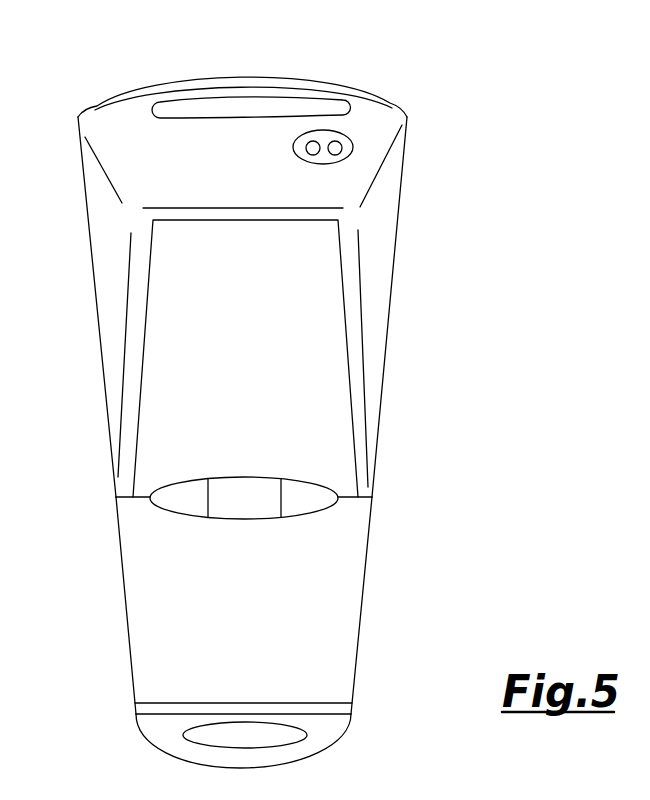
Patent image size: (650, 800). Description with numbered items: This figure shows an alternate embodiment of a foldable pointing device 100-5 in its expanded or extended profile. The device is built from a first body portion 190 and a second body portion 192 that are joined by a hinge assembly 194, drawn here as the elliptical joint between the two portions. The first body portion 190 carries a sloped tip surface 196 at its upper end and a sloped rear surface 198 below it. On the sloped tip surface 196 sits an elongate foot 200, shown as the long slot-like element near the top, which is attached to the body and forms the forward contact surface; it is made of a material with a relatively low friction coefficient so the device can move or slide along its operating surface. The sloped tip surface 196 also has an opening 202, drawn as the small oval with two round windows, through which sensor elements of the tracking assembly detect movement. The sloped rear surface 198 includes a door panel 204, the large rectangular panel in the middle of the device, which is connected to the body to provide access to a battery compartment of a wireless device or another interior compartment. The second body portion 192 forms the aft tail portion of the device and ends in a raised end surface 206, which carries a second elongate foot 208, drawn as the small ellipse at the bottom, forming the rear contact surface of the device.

The foldable pointing device 100-5 is at (431, 192).
The first body portion 190 is at (383, 238).
The second body portion 192 is at (345, 562).
The hinge assembly 194 is at (318, 505).
The sloped tip surface 196 is at (165, 170).
The sloped rear surface 198 is at (213, 298).
The elongate foot 200 is at (288, 108).
The opening 202 is at (357, 143).
The door panel 204 is at (265, 428).
The raised end surface 206 is at (322, 728).
The elongate foot 208 is at (210, 738).